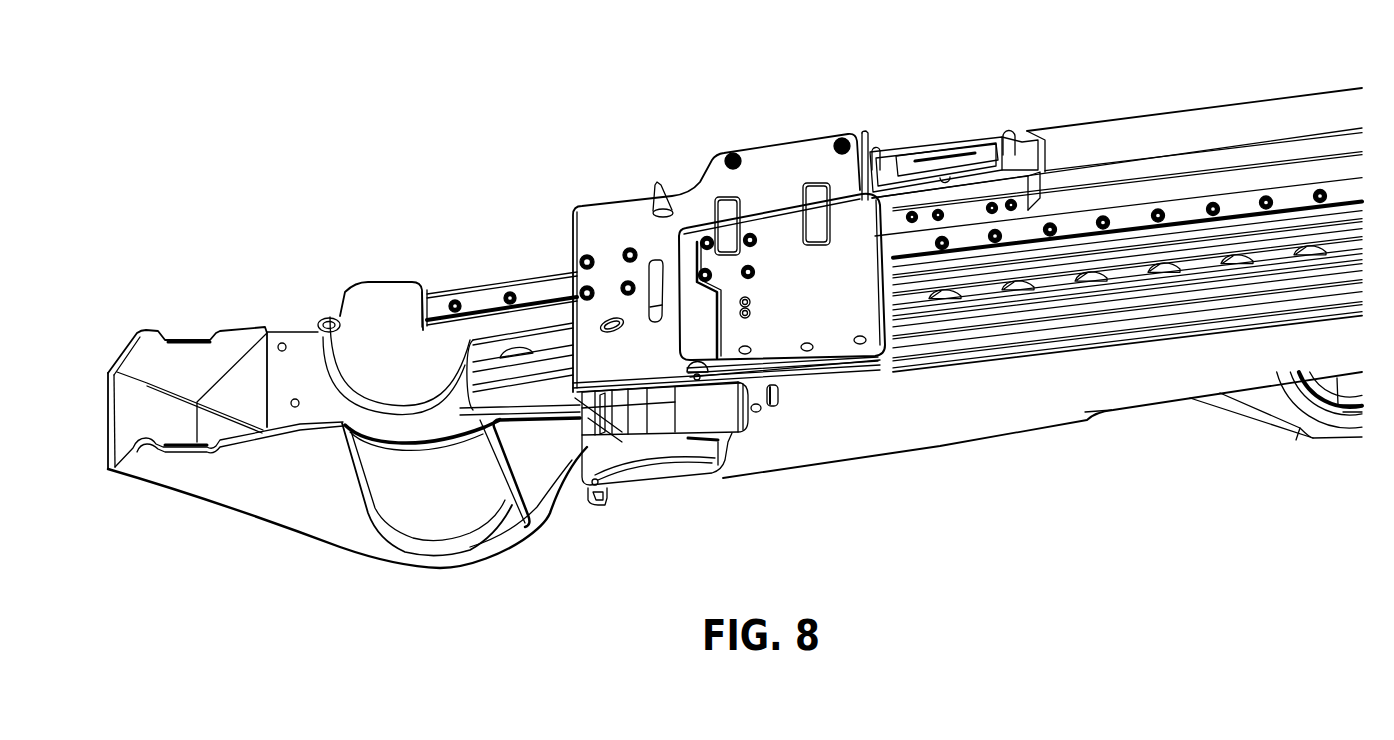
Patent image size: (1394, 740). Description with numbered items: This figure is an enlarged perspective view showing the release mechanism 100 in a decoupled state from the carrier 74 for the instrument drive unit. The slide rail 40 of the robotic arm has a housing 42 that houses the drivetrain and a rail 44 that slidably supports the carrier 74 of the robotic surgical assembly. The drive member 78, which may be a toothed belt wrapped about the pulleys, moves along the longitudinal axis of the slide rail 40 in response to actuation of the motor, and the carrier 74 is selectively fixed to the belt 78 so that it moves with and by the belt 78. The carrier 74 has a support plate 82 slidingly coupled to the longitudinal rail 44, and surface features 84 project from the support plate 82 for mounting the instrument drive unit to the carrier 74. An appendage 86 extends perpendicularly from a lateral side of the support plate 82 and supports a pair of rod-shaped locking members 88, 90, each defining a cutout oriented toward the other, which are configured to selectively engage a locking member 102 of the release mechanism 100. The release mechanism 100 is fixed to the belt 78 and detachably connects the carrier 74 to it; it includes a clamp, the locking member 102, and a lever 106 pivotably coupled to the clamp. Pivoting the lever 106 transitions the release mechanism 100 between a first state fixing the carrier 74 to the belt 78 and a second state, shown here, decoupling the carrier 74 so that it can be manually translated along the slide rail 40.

The slide rail 40 is at (1031, 97).
The housing 42 is at (1113, 390).
The rail 44 is at (1310, 188).
The carrier 74 is at (870, 375).
The drive member 78 is at (1033, 332).
The support plate 82 is at (787, 150).
The surface features 84 is at (650, 277).
The appendage 86 is at (772, 410).
The locking member 88 is at (620, 395).
The locking member 90 is at (634, 441).
The release mechanism 100 is at (599, 520).
The locking member 102 is at (618, 397).
The lever 106 is at (717, 477).